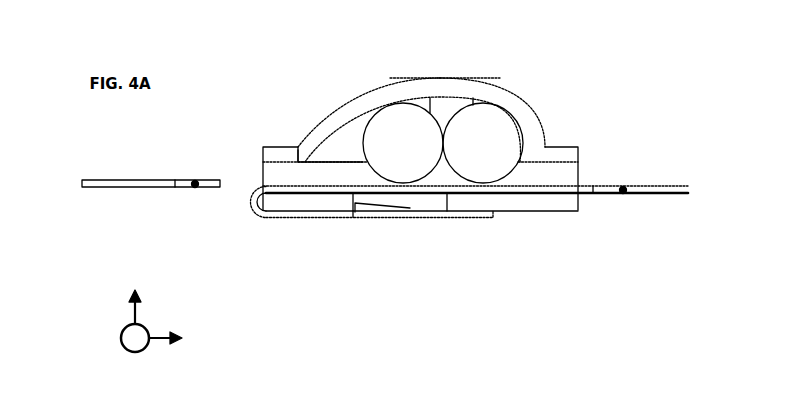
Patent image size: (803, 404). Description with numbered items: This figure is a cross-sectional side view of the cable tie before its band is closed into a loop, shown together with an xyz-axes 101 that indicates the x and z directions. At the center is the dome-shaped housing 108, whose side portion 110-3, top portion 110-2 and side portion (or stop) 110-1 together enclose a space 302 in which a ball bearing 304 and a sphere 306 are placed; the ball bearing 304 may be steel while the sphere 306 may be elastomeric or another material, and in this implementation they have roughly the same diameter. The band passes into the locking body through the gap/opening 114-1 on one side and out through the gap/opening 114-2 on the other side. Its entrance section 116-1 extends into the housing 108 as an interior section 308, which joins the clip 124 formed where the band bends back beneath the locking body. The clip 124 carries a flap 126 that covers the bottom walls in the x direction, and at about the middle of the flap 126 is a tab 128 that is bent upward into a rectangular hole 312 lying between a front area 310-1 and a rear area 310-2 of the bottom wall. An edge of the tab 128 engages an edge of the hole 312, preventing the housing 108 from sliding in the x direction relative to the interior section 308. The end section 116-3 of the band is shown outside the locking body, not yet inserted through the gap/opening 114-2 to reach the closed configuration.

The xyz-axes 101 is at (117, 333).
The housing 108 is at (513, 77).
The side portion 110-1 is at (532, 84).
The top portion 110-2 is at (508, 70).
The side portion 110-3 is at (293, 134).
The gap/opening 114-1 is at (580, 172).
The gap/opening 114-2 is at (262, 174).
The entrance section 116-1 is at (624, 192).
The end section 116-3 is at (195, 188).
The clip 124 is at (250, 214).
The flap 126 is at (471, 213).
The tab 128 is at (375, 213).
The space 302 is at (357, 138).
The ball bearing 304 is at (403, 147).
The sphere 306 is at (493, 138).
The interior section 308 is at (338, 222).
The front area 310-1 is at (318, 200).
The rear area 310-2 is at (532, 205).
The hole 312 is at (407, 204).